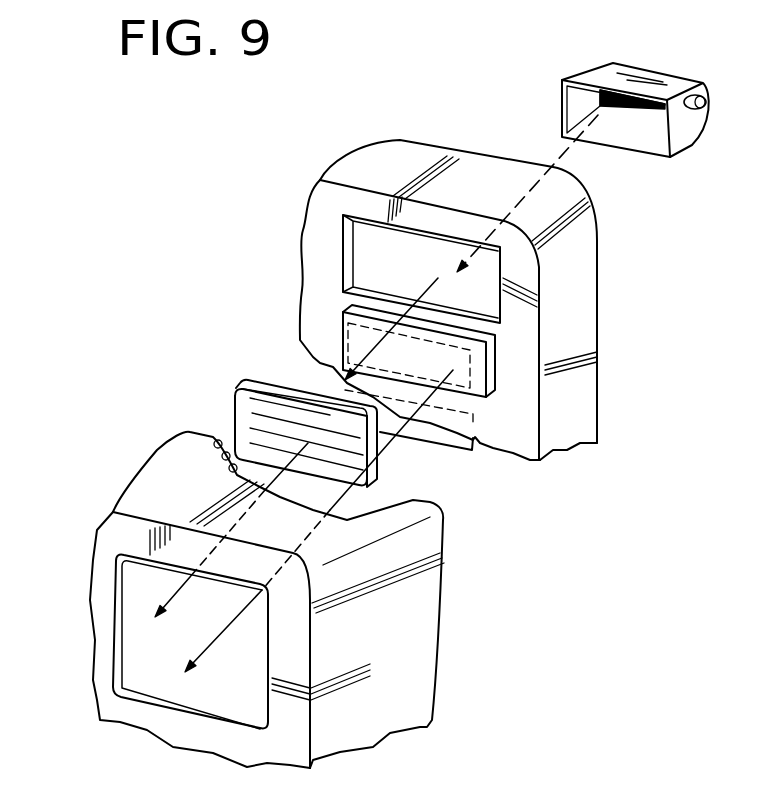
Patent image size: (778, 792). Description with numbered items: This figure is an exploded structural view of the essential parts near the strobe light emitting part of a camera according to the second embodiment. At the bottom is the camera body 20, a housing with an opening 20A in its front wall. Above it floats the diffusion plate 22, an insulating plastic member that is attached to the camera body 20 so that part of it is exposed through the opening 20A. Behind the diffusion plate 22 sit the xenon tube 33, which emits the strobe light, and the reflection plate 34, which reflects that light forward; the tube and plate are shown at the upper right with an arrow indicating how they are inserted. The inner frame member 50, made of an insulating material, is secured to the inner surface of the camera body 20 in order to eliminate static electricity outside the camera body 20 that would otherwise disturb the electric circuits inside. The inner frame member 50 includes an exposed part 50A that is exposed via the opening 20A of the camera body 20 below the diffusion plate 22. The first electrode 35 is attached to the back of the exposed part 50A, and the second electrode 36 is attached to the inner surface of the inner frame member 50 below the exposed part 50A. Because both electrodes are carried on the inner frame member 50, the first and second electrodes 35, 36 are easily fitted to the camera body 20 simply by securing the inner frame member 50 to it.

The camera body 20 is at (422, 607).
The opening 20A is at (115, 630).
The diffusion plate 22 is at (268, 414).
The xenon tube 33 is at (637, 102).
The reflection plate 34 is at (590, 77).
The first electrode 35 is at (497, 381).
The second electrode 36 is at (478, 445).
The inner frame member 50 is at (582, 318).
The exposed part 50A is at (365, 343).